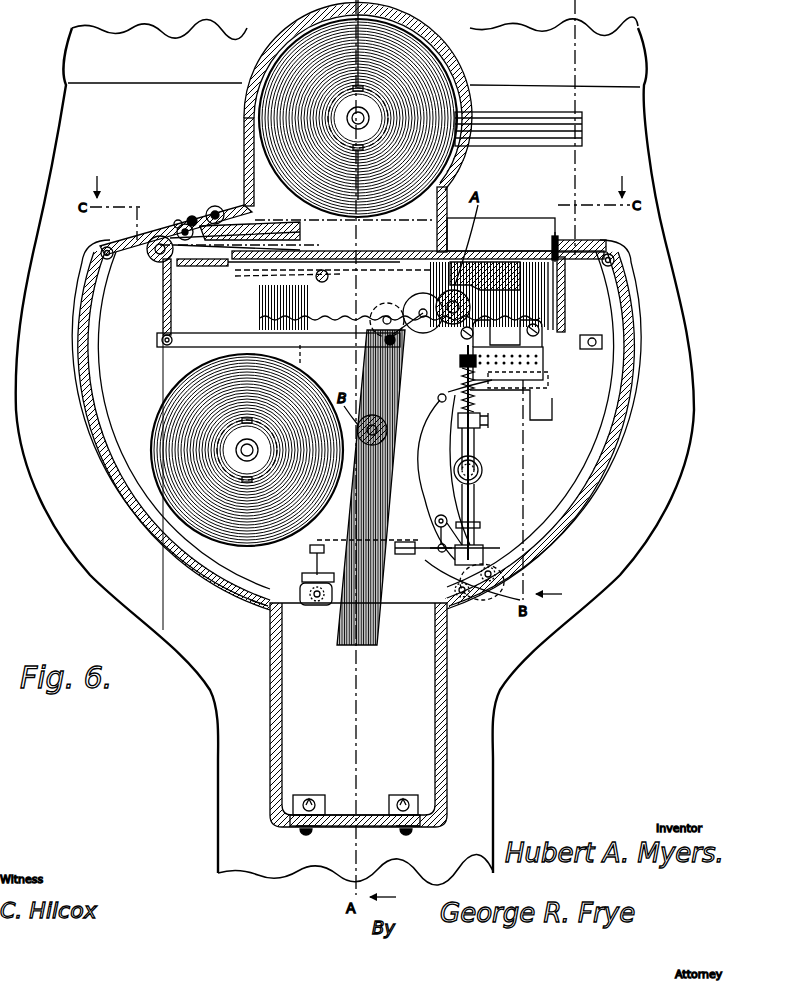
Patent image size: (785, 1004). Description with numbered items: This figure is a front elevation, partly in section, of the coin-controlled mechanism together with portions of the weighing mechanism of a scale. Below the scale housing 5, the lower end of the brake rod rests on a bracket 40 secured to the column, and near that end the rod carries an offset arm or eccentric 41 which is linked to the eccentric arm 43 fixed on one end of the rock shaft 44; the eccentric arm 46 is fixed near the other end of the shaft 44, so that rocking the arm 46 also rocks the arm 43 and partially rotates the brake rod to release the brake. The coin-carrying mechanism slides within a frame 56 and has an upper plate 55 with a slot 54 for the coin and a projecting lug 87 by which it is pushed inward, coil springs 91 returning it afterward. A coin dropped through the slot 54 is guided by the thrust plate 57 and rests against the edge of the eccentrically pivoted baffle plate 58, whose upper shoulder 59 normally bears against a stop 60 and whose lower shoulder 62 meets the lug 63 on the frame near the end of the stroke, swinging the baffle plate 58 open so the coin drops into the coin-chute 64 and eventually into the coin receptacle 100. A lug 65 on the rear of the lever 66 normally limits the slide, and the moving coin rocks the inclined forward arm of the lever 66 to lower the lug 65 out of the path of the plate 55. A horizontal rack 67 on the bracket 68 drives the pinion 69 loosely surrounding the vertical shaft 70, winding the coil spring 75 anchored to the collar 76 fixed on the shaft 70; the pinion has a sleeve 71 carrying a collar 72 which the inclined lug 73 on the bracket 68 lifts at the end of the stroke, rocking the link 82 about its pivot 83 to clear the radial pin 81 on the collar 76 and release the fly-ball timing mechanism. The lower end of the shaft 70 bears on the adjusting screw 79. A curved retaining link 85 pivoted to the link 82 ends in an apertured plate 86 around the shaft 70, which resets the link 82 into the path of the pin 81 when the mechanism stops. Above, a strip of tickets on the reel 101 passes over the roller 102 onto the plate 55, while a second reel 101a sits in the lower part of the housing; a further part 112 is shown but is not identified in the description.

The housing 5 is at (680, 416).
The bracket 40 is at (250, 605).
The offset arm or eccentric 41 is at (312, 548).
The eccentric arm 43 is at (430, 550).
The rock shaft 44 is at (462, 598).
The eccentric arm 46 is at (441, 517).
The slot 54 is at (462, 290).
The upper plate 55 is at (556, 240).
The frame 56 is at (565, 300).
The thrust plate 57 is at (560, 276).
The baffle plate 58 is at (548, 372).
The shoulder 59 is at (405, 268).
The stop 60 is at (440, 290).
The shoulder 62 is at (386, 435).
The lug 63 is at (350, 346).
The coin-chute 64 is at (378, 637).
The lug 65 is at (232, 265).
The lever 66 is at (268, 272).
The horizontal rack 67 is at (545, 365).
The bracket 68 is at (545, 338).
The pinion 69 is at (480, 372).
The vertical shaft 70 is at (478, 398).
The sleeve 71 is at (500, 396).
The collar 72 is at (500, 370).
The lug 73 is at (540, 393).
The coil spring 75 is at (480, 416).
The collar 76 is at (478, 432).
The adjusting screw 79 is at (495, 400).
The pin or lug 81 is at (482, 472).
The link 82 is at (478, 498).
The pivot 83 is at (442, 398).
The curved retaining link 85 is at (455, 565).
The apertured plate 86 is at (498, 540).
The projecting lug 87 is at (560, 240).
The coil springs 91 is at (163, 330).
The coin receptacle 100 is at (447, 735).
The reel 101 is at (415, 98).
The reel 101a is at (238, 516).
The roller 102 is at (242, 195).
The guide 112 is at (583, 128).